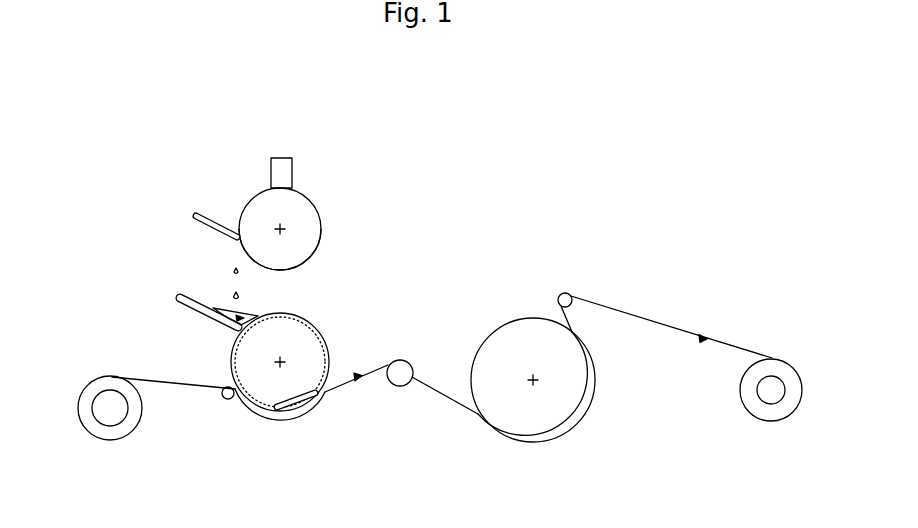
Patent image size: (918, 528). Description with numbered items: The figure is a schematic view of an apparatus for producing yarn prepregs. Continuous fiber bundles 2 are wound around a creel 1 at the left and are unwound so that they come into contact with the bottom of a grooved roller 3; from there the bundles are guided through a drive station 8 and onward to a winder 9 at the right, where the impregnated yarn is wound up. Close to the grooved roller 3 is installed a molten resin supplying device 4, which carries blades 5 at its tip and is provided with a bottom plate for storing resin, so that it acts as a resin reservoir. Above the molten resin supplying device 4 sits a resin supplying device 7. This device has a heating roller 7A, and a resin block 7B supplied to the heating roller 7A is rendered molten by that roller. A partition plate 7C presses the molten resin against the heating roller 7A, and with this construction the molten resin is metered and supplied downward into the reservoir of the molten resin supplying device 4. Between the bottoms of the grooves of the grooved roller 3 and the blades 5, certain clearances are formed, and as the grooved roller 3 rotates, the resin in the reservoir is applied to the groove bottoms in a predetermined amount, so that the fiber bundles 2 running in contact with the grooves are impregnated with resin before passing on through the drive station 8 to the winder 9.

The creel 1 is at (83, 392).
The continuous fiber bundles 2 is at (173, 382).
The grooved roller 3 is at (328, 340).
The molten resin supplying device 4 is at (222, 308).
The blades 5 is at (178, 296).
The resin supplying device 7 is at (320, 204).
The heating roller 7A is at (323, 228).
The resin block 7B is at (282, 158).
The partition plate 7C is at (208, 210).
The drive station 8 is at (585, 413).
The take-up roll 9 is at (792, 367).